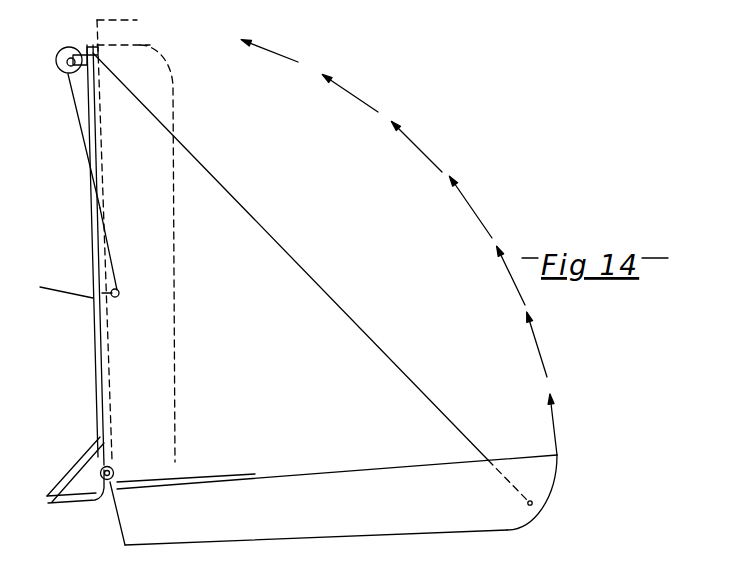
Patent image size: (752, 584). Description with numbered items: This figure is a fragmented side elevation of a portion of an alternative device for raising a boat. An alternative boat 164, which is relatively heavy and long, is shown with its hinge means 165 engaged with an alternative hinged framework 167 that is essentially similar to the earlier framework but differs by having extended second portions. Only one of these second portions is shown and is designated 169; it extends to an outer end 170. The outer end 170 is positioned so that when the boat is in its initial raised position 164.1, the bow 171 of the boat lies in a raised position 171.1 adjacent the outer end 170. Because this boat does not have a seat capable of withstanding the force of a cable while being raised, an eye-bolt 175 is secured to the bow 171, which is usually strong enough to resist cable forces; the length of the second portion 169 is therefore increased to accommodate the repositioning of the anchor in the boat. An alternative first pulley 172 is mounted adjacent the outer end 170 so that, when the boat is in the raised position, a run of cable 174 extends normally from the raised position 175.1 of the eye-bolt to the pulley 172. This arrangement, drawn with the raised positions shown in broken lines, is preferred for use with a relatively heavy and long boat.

The alternative boat 164 is at (347, 451).
The initial raised position of the boat 164.1 is at (164, 297).
The hinge means 165 is at (120, 474).
The alternative hinged framework 167 is at (88, 378).
The extended second portion 169 is at (95, 215).
The outer end 170 is at (89, 44).
The bow 171 is at (560, 481).
The raised position of the bow 171.1 is at (118, 21).
The alternative first pulley 172 is at (76, 45).
The cable 174 is at (262, 208).
The eye-bolt 175 is at (528, 504).
The raised position of the eye-bolt 175.1 is at (152, 44).